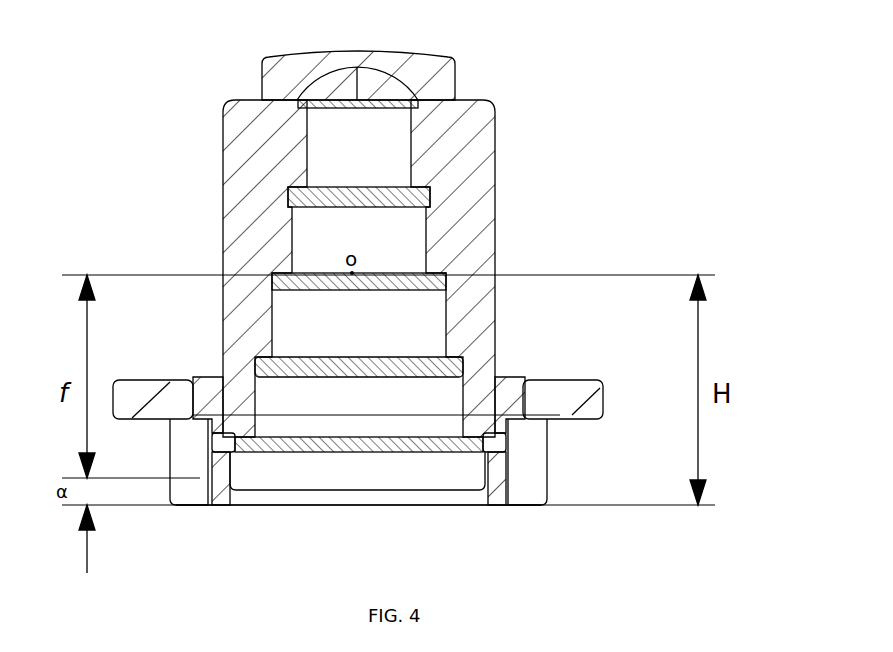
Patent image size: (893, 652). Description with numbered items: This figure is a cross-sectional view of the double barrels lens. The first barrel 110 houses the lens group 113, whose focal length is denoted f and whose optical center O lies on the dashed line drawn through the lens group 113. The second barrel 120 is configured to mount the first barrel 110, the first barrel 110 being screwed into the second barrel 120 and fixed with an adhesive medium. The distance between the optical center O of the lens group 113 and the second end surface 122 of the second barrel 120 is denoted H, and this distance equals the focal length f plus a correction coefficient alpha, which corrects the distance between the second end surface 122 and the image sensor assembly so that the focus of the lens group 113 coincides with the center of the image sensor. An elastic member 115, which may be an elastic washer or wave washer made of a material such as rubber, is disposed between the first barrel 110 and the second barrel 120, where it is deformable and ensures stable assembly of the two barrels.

The first barrel 110 is at (467, 190).
The lens group 113 is at (432, 276).
The elastic member 115 is at (515, 422).
The second barrel 120 is at (532, 478).
The second end surface 122 is at (530, 508).